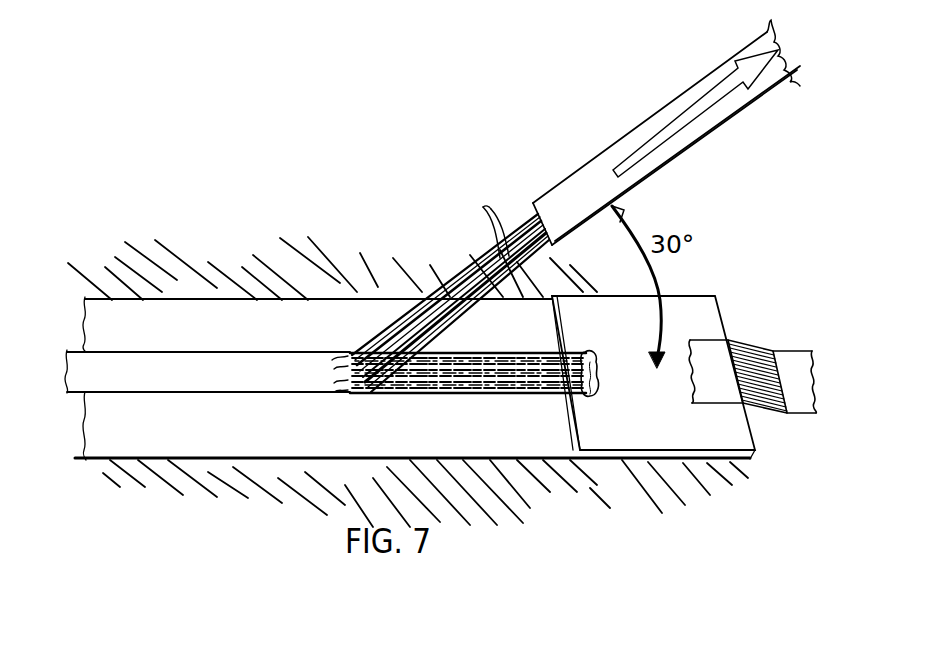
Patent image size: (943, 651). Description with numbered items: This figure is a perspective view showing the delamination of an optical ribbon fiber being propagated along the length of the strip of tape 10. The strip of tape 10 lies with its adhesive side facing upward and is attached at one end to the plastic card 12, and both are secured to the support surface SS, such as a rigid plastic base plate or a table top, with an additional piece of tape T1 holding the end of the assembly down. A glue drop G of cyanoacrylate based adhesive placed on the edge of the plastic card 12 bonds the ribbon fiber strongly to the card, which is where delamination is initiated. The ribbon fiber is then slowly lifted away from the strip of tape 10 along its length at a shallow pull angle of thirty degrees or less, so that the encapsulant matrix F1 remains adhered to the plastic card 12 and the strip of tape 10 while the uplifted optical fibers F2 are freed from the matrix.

The strip of tape 10 is at (252, 437).
The plastic card 12 is at (664, 434).
The encapsulant matrix F1 is at (443, 396).
The optical fibers F2 is at (480, 208).
The glue drop G is at (596, 397).
The piece of tape T1 is at (715, 383).
The support surface SS is at (572, 521).